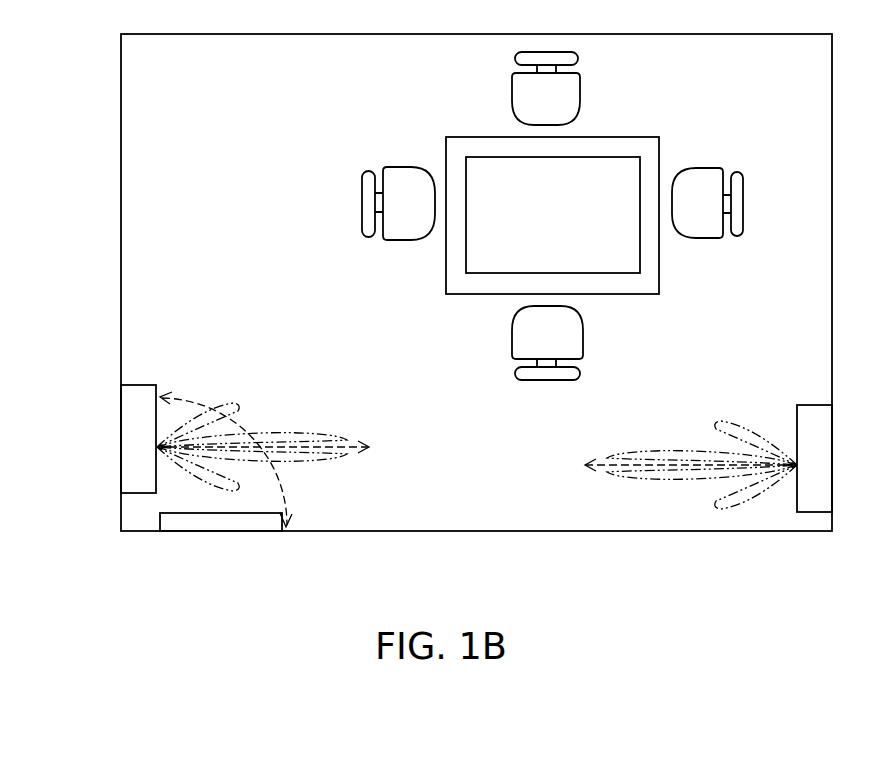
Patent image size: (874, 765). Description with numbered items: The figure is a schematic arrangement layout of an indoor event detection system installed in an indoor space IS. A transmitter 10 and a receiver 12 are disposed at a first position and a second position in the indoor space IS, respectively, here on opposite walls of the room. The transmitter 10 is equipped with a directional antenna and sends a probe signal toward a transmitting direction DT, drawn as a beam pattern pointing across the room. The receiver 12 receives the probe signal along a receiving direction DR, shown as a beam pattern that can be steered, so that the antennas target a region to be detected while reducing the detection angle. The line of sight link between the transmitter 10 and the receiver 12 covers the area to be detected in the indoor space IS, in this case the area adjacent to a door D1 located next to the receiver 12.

The indoor space IS is at (150, 96).
The transmitter 10 is at (797, 405).
The receiver 12 is at (155, 385).
The door D1 is at (177, 523).
The receiving direction DR is at (283, 447).
The transmitting direction DT is at (672, 465).